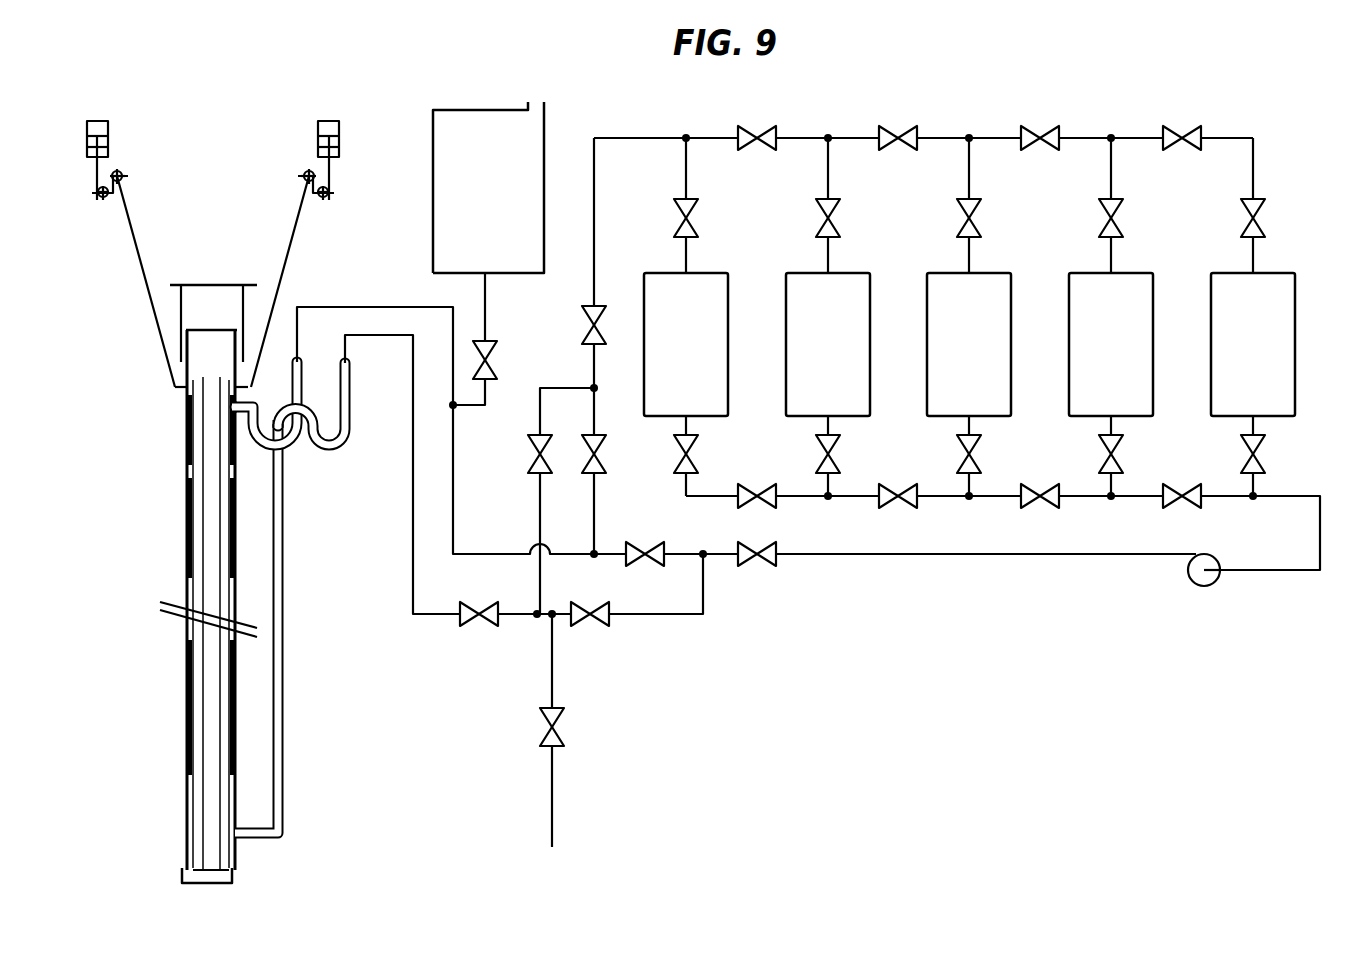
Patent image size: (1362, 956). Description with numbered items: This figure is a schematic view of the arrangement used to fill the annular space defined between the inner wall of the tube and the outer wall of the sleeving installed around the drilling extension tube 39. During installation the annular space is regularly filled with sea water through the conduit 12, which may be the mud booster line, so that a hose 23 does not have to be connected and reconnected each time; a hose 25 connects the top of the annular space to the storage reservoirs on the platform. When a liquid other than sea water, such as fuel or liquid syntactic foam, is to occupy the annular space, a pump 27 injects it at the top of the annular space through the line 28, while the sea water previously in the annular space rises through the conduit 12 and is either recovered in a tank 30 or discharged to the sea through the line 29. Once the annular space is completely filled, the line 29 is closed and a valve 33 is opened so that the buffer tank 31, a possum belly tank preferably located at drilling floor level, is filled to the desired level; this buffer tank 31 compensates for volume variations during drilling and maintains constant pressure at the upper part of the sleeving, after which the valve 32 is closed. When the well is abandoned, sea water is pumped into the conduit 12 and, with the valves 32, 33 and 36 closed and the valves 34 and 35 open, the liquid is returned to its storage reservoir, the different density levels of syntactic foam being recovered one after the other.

The conduit 12 is at (279, 663).
The hose 23 is at (347, 442).
The hose 25 is at (288, 452).
The pump 27 is at (1207, 586).
The line 28 is at (371, 305).
The line 29 is at (412, 526).
The tank 30 is at (1297, 322).
The buffer tank 31 is at (433, 160).
The valve 32 is at (637, 548).
The valve 33 is at (494, 367).
The valve 34 is at (632, 457).
The valve 35 is at (583, 325).
The valve 36 is at (527, 467).
The drilling extension tube 39 is at (126, 606).